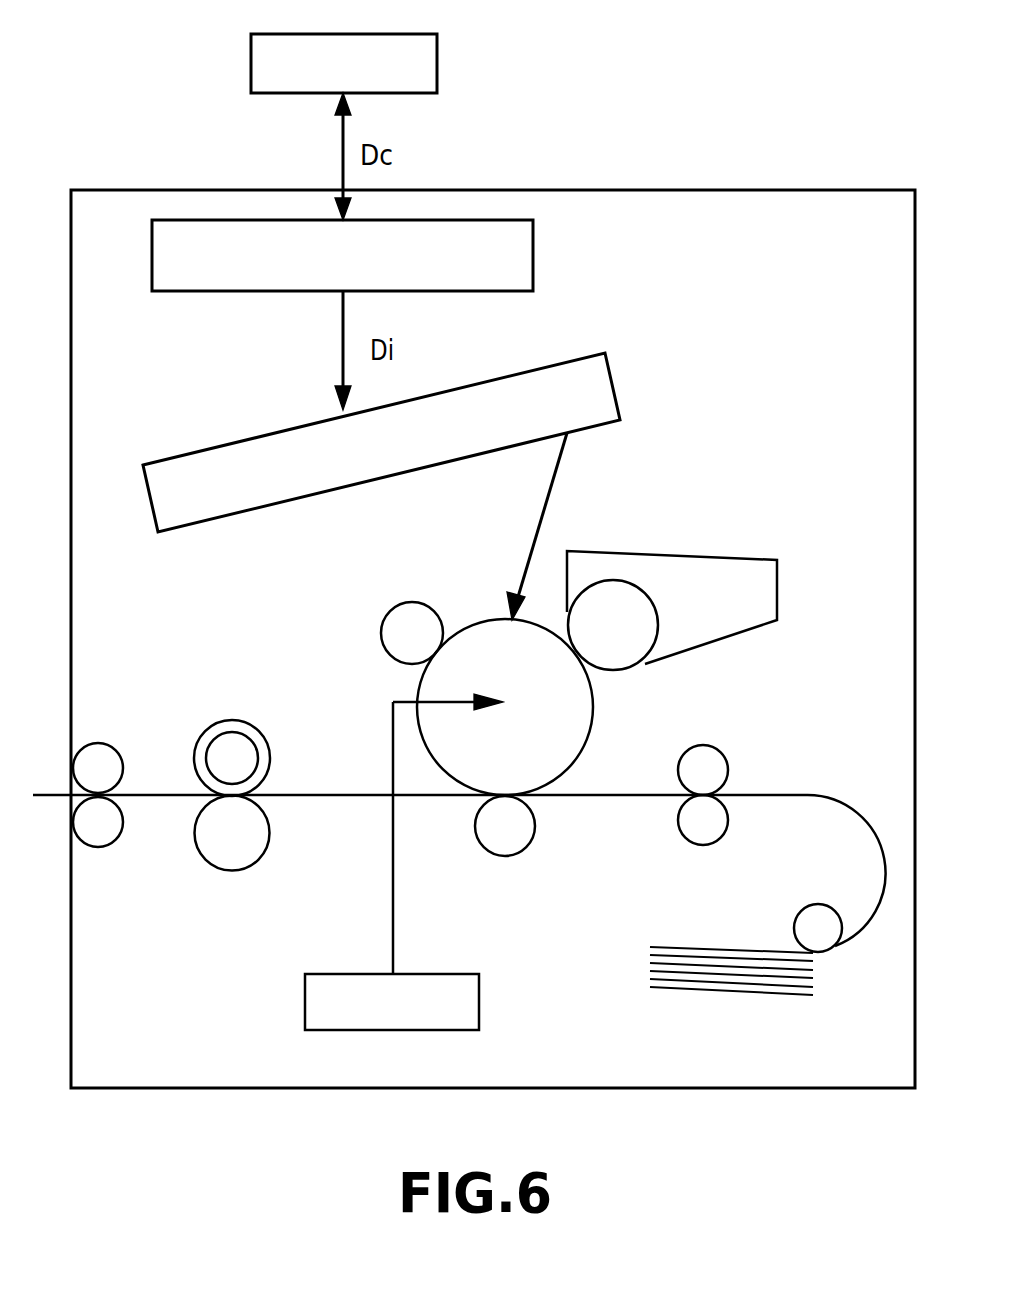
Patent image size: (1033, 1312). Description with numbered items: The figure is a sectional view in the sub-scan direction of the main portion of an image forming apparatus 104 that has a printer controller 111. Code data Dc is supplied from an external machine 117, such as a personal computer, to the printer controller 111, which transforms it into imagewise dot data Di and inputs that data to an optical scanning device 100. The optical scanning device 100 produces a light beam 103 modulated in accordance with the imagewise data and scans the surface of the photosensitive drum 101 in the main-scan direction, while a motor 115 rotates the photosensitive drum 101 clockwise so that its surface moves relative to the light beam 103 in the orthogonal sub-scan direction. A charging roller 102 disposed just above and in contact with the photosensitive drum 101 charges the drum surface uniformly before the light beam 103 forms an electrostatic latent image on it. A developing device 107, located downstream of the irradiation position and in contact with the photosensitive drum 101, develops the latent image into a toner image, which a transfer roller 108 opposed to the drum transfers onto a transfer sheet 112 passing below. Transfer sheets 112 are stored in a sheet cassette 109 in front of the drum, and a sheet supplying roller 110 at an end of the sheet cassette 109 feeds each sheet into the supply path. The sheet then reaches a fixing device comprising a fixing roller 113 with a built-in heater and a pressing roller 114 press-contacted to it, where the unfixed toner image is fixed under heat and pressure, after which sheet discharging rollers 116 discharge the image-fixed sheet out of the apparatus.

The optical scanning device 100 is at (240, 440).
The photosensitive drum 101 is at (595, 718).
The charging roller 102 is at (393, 610).
The light beam 103 is at (543, 500).
The image forming apparatus 104 is at (768, 190).
The developing device 107 is at (700, 557).
The transfer roller 108 is at (536, 829).
The sheet cassette 109 is at (667, 988).
The sheet supplying roller 110 is at (820, 905).
The printer controller 111 is at (533, 250).
The transfer sheet 112 is at (330, 793).
The fixing roller 113 is at (232, 720).
The pressing roller 114 is at (267, 847).
The motor 115 is at (479, 1000).
The sheet discharging rollers 116 is at (102, 743).
The external machine 117 is at (437, 55).